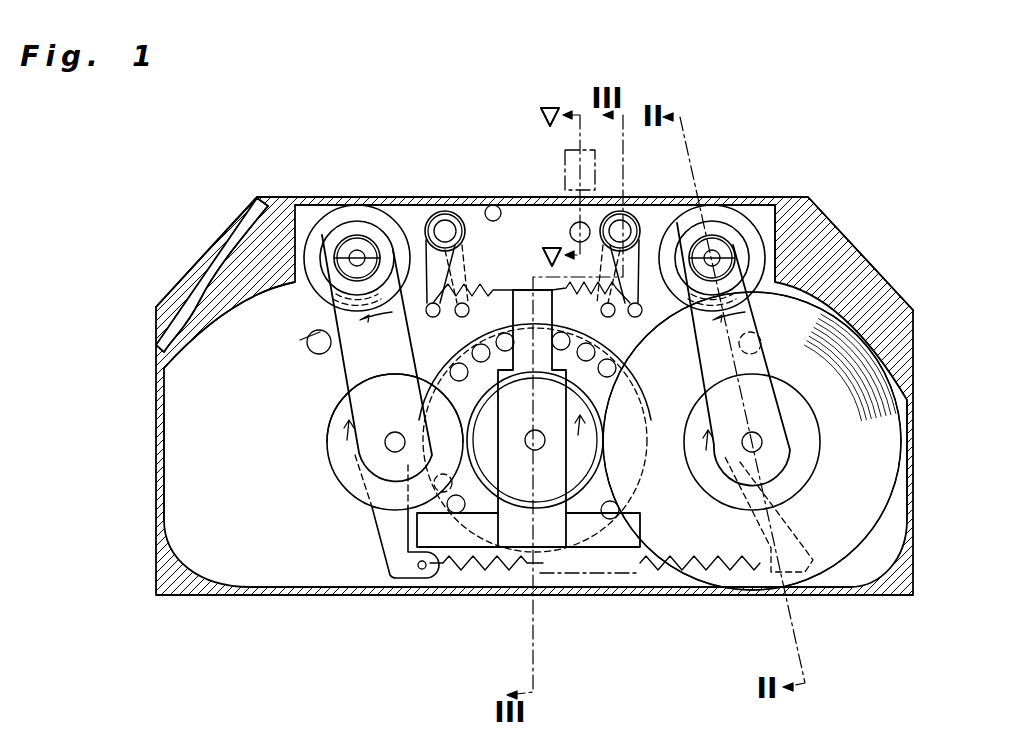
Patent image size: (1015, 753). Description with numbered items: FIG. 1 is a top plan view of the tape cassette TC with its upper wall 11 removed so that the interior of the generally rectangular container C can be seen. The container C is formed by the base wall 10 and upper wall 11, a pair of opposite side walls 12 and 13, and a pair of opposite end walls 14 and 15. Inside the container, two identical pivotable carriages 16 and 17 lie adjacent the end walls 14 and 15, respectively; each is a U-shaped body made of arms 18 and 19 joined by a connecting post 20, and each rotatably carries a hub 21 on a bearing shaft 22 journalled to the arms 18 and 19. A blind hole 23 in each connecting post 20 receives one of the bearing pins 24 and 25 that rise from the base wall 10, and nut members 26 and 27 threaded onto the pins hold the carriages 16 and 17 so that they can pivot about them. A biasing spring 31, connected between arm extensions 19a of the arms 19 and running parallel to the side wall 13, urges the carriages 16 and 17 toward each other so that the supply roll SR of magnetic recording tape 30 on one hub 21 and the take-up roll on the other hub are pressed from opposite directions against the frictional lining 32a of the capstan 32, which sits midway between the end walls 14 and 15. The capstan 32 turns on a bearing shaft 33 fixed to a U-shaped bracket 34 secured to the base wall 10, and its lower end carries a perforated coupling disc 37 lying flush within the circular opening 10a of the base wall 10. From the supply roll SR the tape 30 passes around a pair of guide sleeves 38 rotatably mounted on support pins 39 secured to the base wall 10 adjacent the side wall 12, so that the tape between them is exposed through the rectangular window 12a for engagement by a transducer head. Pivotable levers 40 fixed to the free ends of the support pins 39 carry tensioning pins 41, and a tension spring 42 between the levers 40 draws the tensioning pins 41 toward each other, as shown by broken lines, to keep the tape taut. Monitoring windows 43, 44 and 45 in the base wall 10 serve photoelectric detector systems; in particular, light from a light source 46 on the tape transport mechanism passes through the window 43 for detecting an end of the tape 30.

The base wall 10 is at (233, 570).
The circular opening 10a is at (558, 548).
The upper wall 11 is at (240, 215).
The side wall 12 is at (760, 200).
The rectangular window 12a is at (520, 200).
The side wall 13 is at (362, 595).
The end wall 14 is at (913, 503).
The end wall 15 is at (159, 475).
The pivotable carriage 16 is at (776, 350).
The pivotable carriage 17 is at (328, 361).
The arm 18 is at (330, 413).
The arm 19 is at (597, 426).
The arm extension 19a is at (372, 545).
The connecting post 20 is at (357, 235).
The hub 21 is at (355, 487).
The bearing shaft 22 is at (386, 443).
The blind hole 23 is at (340, 222).
The bearing pin 24 is at (830, 215).
The bearing pin 25 is at (349, 253).
The nut member 26 is at (712, 250).
The nut member 27 is at (335, 267).
The magnetic recording tape 30 is at (492, 206).
The biasing spring 31 is at (443, 578).
The capstan 32 is at (575, 500).
The frictional lining 32a is at (573, 475).
The bearing shaft 33 is at (530, 450).
The U-shaped bracket 34 is at (523, 523).
The coupling disc 37 is at (412, 357).
The guide sleeve 38 is at (448, 211).
The support pin 39 is at (462, 302).
The pivotable lever 40 is at (426, 290).
The tensioning pin 41 is at (330, 328).
The tension spring 42 is at (485, 288).
The monitoring window 43 is at (578, 224).
The monitoring window 44 is at (768, 332).
The monitoring window 45 is at (307, 341).
The light source 46 is at (580, 150).
The container C is at (187, 597).
The tape cassette TC is at (308, 600).
The supply roll SR is at (833, 545).